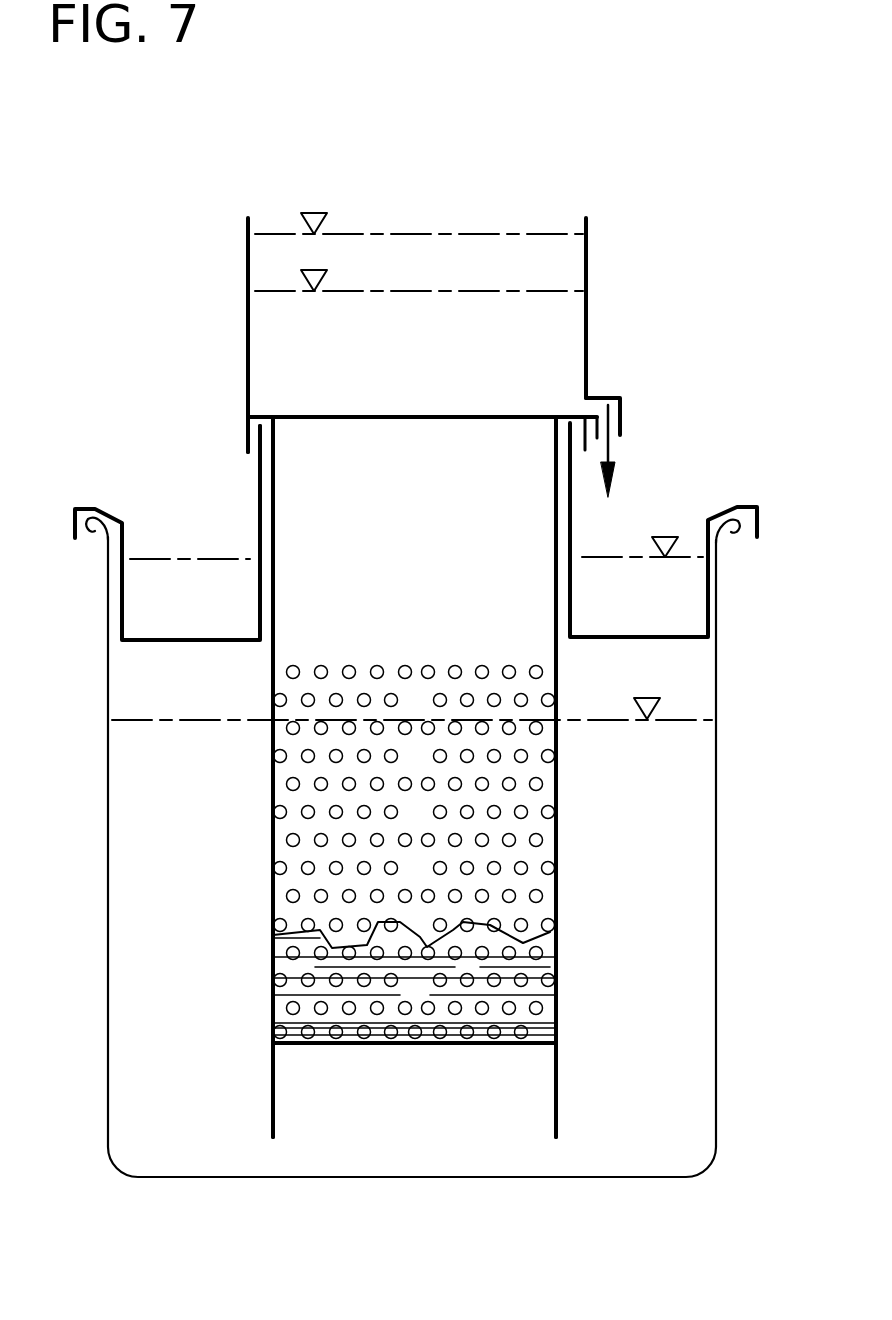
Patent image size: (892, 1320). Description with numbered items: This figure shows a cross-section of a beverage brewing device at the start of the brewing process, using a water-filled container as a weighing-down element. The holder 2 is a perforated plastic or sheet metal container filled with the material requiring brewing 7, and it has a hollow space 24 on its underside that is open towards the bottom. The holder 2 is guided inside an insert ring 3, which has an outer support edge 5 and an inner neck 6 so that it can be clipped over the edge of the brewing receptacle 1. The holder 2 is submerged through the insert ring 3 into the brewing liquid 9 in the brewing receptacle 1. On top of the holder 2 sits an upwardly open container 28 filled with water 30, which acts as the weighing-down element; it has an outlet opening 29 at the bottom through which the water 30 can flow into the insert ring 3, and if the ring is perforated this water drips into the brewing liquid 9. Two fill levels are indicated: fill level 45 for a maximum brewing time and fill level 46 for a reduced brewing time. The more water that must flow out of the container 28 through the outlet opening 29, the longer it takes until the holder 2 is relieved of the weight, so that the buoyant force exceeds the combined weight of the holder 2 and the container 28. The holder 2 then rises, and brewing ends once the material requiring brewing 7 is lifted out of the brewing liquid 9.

The brewing receptacle 1 is at (716, 752).
The holder 2 is at (272, 768).
The insert ring 3 is at (665, 637).
The outer support edge 5 is at (93, 508).
The inner neck 6 is at (256, 527).
The material requiring brewing 7 is at (272, 1007).
The brewing liquid 9 is at (673, 1002).
The hollow space 24 is at (388, 1102).
The container 28 is at (586, 278).
The outlet opening 29 is at (617, 397).
The water 30 is at (264, 352).
The fill level 45 is at (312, 211).
The fill level 46 is at (312, 268).